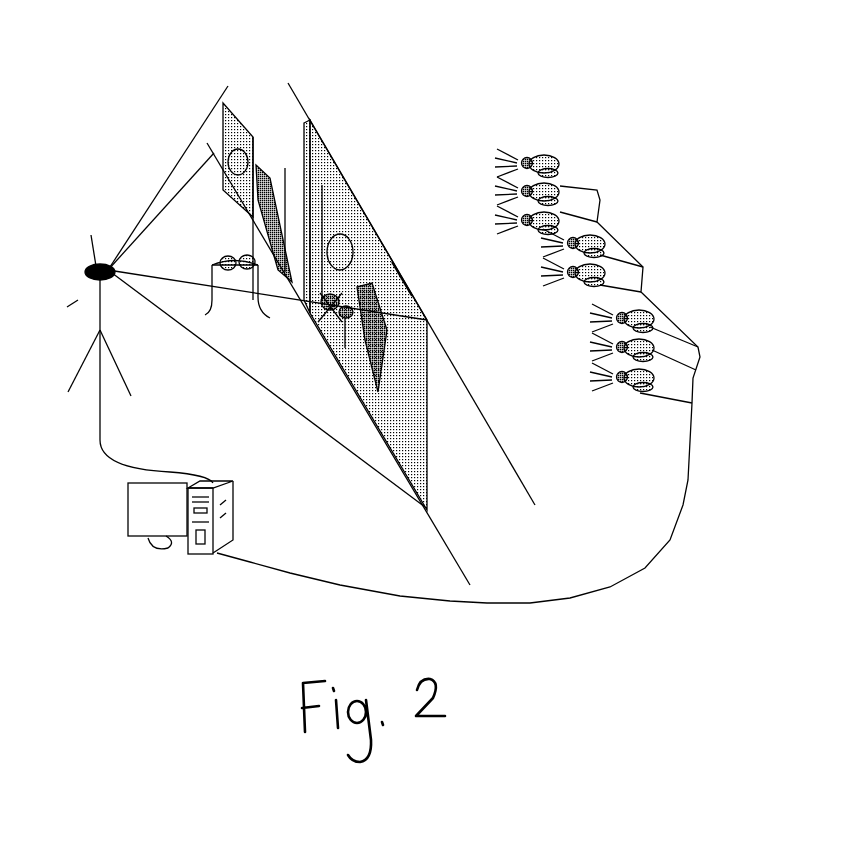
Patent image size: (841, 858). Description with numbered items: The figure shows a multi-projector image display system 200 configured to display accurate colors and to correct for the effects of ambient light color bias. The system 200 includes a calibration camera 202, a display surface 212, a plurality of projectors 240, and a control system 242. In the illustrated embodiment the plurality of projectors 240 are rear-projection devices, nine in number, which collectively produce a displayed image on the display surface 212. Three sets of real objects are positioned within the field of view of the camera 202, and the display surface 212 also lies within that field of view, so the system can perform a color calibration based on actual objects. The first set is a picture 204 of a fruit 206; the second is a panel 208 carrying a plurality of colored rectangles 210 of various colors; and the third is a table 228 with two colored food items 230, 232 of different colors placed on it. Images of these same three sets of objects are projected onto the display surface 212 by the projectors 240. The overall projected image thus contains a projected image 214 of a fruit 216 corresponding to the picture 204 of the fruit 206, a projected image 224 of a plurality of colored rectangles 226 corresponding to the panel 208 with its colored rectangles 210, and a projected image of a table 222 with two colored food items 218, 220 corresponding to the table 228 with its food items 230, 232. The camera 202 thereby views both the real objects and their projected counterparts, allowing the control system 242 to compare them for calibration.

The multi-projector image display system 200 is at (132, 92).
The calibration camera 202 is at (135, 344).
The picture 204 is at (231, 105).
The fruit 206 is at (248, 128).
The panel 208 is at (250, 162).
The colored rectangles 210 is at (255, 192).
The display surface 212 is at (320, 150).
The projected image 214 is at (322, 185).
The fruit 216 is at (345, 236).
The colored food item 218 is at (324, 303).
The colored food item 220 is at (342, 313).
The table 222 is at (342, 340).
The projected image 224 is at (366, 274).
The colored rectangles 226 is at (402, 288).
The table 228 is at (215, 277).
The colored food item 230 is at (228, 260).
The colored food item 232 is at (246, 261).
The projectors 240 is at (539, 152).
The control system 242 is at (214, 484).